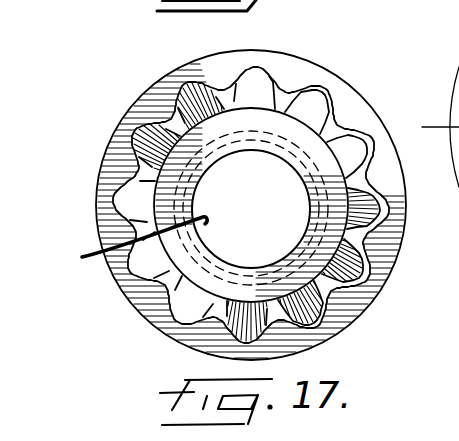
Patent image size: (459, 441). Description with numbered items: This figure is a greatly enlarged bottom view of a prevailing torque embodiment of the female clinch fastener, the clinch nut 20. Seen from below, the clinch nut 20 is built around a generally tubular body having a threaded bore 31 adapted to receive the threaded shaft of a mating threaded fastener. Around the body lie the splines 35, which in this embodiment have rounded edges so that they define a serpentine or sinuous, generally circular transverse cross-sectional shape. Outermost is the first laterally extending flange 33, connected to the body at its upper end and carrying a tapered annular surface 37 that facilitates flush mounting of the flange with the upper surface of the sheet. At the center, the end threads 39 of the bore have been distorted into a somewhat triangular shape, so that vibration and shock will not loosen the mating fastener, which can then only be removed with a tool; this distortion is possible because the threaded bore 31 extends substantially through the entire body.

The clinch nut 20 is at (112, 112).
The threaded bore 31 is at (258, 216).
The first laterally extending flange 33 is at (350, 324).
The splines 35 is at (396, 168).
The tapered annular surface 37 is at (290, 70).
The end threads 39 is at (127, 245).